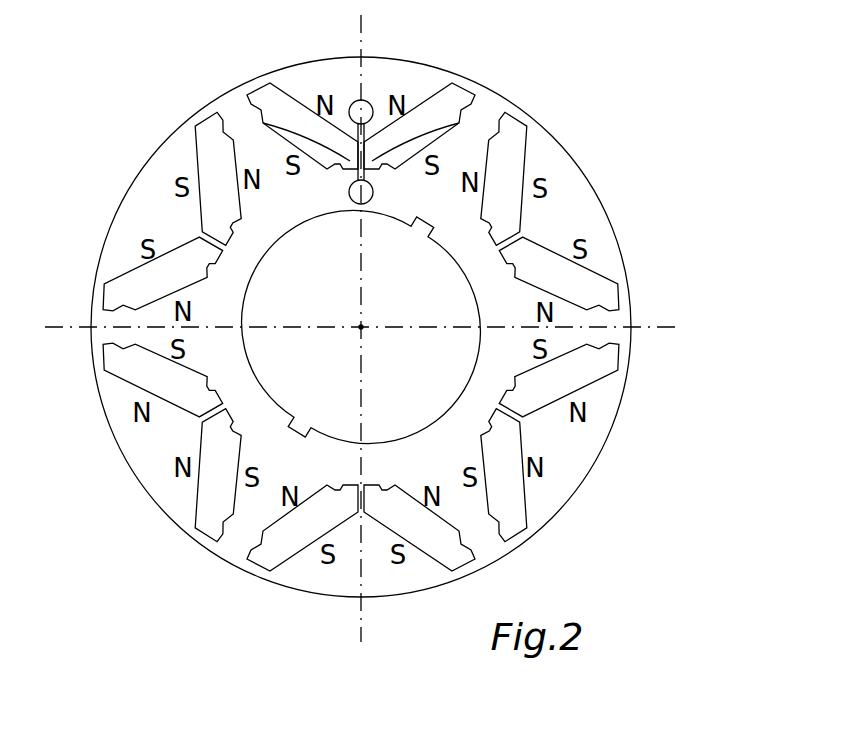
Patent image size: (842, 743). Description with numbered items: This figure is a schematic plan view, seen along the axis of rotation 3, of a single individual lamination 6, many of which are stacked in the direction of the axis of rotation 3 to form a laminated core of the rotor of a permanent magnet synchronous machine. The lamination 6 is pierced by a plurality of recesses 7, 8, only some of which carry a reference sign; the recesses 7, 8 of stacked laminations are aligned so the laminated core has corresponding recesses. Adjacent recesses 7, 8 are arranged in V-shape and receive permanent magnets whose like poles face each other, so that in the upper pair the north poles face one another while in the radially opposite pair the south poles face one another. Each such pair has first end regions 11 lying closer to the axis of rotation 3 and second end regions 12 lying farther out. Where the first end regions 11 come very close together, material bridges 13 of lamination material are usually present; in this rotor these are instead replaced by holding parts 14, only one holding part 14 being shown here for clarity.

The axis of rotation 3 is at (361, 327).
The individual lamination 6 is at (118, 152).
The recess 7 is at (426, 103).
The recess 8 is at (304, 109).
The first end region 11 is at (266, 127).
The second end region 12 is at (268, 100).
The material bridge 13 is at (518, 238).
The holding part 14 is at (371, 98).